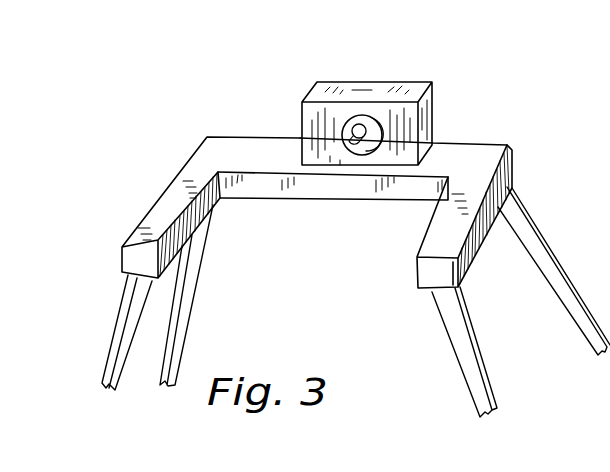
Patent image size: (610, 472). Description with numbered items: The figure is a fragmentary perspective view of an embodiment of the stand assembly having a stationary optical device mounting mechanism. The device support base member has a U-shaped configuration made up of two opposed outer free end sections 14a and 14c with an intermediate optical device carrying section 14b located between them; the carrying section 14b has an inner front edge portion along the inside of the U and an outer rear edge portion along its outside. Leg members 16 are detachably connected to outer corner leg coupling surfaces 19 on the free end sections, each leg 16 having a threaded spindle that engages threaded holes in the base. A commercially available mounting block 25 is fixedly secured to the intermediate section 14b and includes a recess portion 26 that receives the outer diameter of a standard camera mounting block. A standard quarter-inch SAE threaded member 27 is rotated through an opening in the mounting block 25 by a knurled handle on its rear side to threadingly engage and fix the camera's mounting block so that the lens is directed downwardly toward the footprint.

The outer free end section 14a is at (425, 268).
The intermediate optical device carrying section 14b is at (323, 187).
The outer free end section 14c is at (158, 217).
The leg member 16 is at (553, 268).
The outer corner leg coupling surface 19 is at (427, 292).
The mounting block 25 is at (383, 80).
The recess portion 26 is at (341, 120).
The threaded member 27 is at (366, 131).